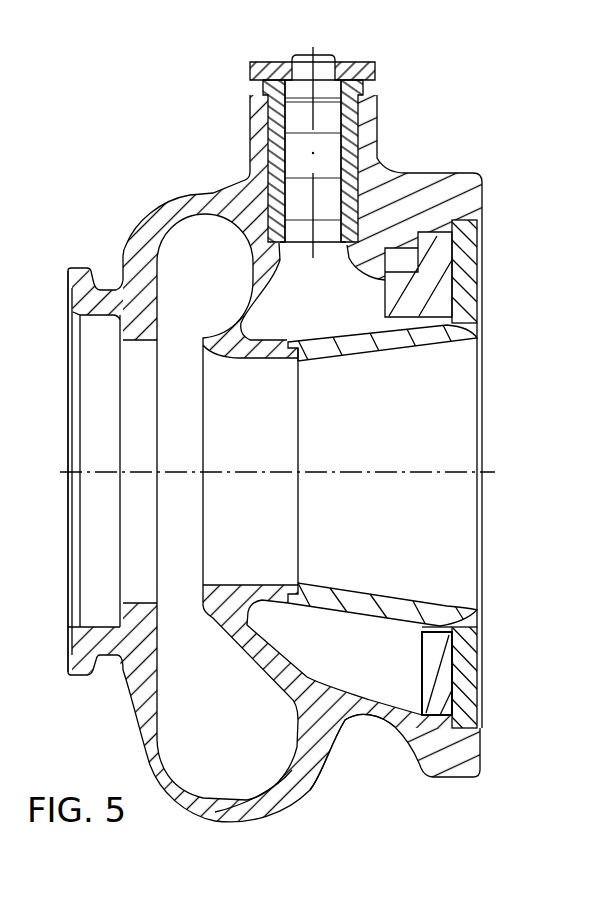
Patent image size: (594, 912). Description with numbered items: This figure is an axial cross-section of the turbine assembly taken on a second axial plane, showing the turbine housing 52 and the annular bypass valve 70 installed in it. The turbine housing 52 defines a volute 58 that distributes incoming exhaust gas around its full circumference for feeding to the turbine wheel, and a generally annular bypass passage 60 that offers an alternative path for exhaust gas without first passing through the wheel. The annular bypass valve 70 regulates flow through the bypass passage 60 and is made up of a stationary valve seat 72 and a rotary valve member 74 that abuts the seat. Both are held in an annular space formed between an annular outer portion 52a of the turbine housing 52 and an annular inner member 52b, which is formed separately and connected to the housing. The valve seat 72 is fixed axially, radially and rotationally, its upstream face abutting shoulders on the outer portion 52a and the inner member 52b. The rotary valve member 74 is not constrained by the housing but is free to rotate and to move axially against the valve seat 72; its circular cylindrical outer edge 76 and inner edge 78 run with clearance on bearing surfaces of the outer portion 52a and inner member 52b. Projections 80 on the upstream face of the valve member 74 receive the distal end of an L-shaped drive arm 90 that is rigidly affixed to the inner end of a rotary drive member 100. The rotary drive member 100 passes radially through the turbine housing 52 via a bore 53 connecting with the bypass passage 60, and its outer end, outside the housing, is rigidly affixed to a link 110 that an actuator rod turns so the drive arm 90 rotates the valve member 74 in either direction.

The turbine housing 52 is at (135, 693).
The annular outer portion of the turbine housing 52a is at (370, 713).
The annular inner member 52b is at (390, 600).
The bore 53 is at (350, 172).
The volute 58 is at (190, 253).
The bypass passage 60 is at (363, 595).
The annular bypass valve 70 is at (490, 240).
The valve seat 72 is at (460, 307).
The rotary valve member 74 is at (430, 657).
The outer edge of the valve member 76 is at (427, 232).
The inner edge of the valve member 78 is at (437, 625).
The projections 80 is at (397, 293).
The drive arm 90 is at (328, 270).
The rotary drive member 100 is at (298, 145).
The link 110 is at (273, 63).